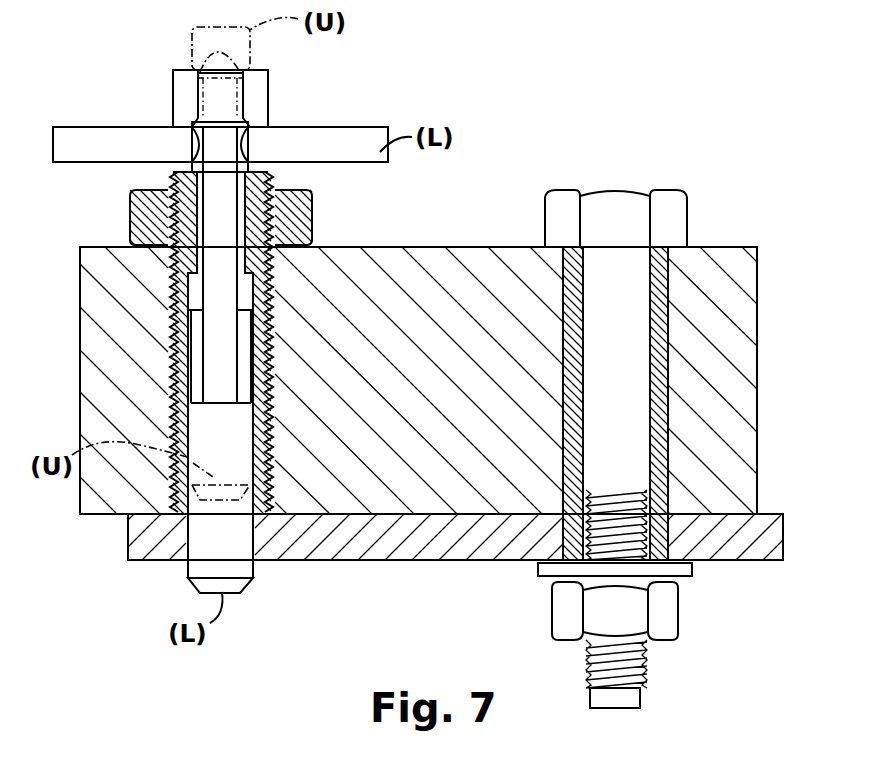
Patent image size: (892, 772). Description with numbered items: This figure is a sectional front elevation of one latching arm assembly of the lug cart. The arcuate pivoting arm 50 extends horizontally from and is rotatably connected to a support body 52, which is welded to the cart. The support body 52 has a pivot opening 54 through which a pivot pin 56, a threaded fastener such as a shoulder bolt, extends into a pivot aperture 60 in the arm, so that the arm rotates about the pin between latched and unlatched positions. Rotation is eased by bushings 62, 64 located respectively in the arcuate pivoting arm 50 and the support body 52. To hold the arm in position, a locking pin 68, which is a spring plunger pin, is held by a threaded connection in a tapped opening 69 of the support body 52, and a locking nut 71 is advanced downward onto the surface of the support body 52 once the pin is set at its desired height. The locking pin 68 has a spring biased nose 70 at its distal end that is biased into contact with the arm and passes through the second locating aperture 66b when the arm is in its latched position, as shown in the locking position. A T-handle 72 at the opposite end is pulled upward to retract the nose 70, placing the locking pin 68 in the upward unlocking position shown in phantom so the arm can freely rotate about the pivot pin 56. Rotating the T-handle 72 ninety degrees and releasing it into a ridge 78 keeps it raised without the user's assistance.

The arcuate pivoting arm 50 is at (775, 515).
The support body 52 is at (757, 355).
The pivot opening 54 is at (620, 338).
The pivot pin 56 is at (610, 210).
The pivot aperture 60 is at (557, 565).
The bushing 62 is at (663, 537).
The bushing 64 is at (657, 345).
The second locating aperture 66b is at (185, 562).
The locking pin 68 is at (268, 97).
The tapped opening 69 is at (177, 307).
The nose 70 is at (220, 557).
The locking nut 71 is at (312, 218).
The T-handle 72 is at (152, 137).
The ridge 78 is at (217, 75).